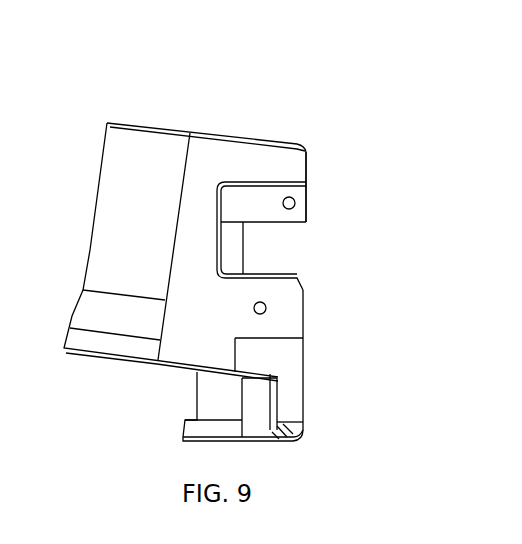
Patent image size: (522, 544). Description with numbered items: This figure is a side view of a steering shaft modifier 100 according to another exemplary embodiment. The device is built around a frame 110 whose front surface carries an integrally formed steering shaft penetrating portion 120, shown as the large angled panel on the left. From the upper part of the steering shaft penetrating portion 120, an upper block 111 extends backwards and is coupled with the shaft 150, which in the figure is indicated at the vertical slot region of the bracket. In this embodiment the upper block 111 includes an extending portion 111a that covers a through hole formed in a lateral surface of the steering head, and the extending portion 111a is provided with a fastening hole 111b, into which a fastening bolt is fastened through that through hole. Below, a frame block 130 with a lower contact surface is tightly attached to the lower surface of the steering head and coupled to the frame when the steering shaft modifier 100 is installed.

The steering shaft modifier 100 is at (197, 47).
The frame 110 is at (249, 267).
The upper block 111 is at (308, 160).
The extending portion 111a is at (307, 192).
The fastening hole 111b is at (306, 217).
The steering shaft penetrating portion 120 is at (117, 184).
The frame block 130 is at (306, 375).
The shaft 150 is at (250, 248).